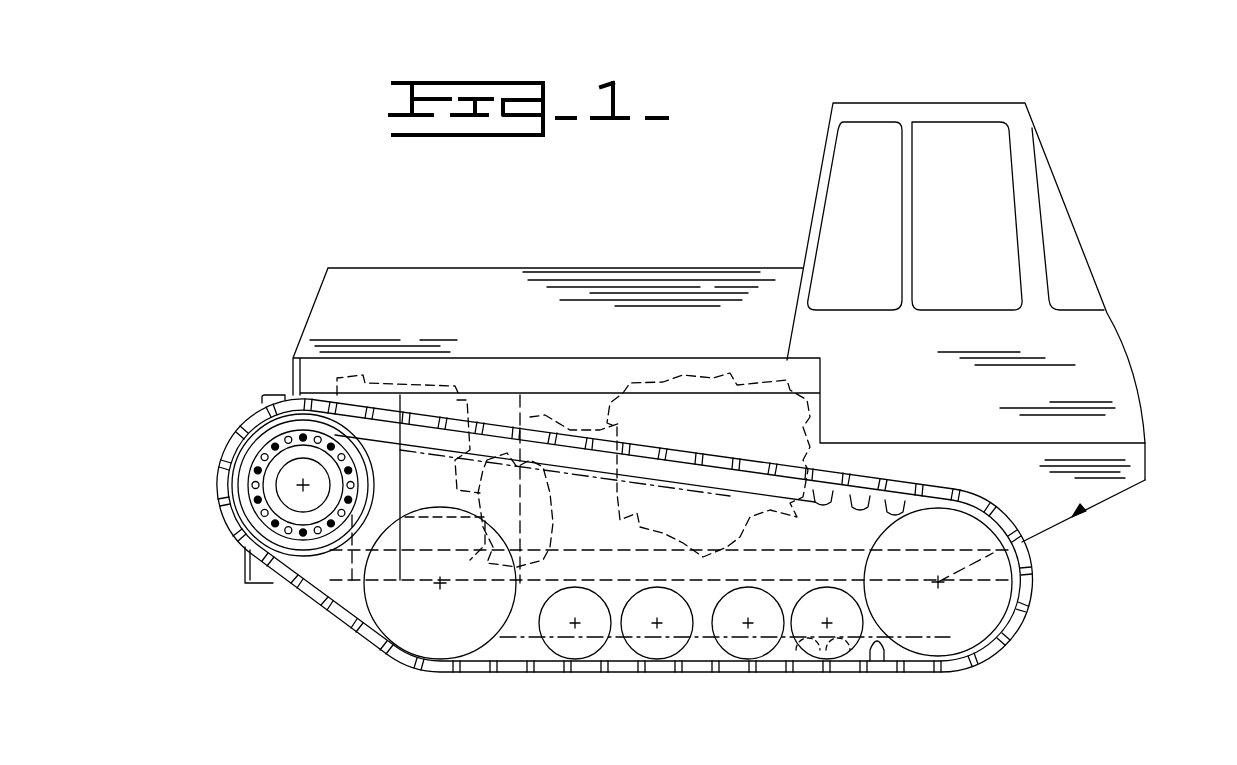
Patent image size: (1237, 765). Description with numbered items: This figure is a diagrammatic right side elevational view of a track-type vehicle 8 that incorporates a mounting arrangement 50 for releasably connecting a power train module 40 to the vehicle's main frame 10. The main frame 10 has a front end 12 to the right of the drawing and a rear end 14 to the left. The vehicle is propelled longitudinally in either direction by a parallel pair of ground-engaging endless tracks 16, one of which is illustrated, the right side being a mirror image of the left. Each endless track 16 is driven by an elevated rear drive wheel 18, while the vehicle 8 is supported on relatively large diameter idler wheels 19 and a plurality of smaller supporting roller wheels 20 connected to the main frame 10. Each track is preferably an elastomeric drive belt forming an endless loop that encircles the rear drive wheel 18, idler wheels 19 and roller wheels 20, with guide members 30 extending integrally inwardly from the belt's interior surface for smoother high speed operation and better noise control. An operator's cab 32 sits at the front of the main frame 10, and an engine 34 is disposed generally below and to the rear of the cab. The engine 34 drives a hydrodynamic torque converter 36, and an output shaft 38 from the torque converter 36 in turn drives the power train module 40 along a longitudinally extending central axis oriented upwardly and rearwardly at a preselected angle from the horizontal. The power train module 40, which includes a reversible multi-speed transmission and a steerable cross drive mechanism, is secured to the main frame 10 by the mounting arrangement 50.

The track-type vehicle 8 is at (1130, 122).
The main frame 10 is at (1078, 515).
The front end 12 is at (1135, 462).
The rear end 14 is at (297, 376).
The endless track 16 is at (945, 488).
The rear drive wheel 18 is at (250, 520).
The idler wheels 19 is at (487, 625).
The supporting roller wheels 20 is at (590, 608).
The guide members 30 is at (835, 497).
The operator's cab 32 is at (796, 218).
The engine 34 is at (720, 358).
The hydrodynamic torque converter 36 is at (607, 388).
The output shaft 38 is at (518, 438).
The power train module 40 is at (420, 383).
The mounting arrangement 50 is at (224, 436).